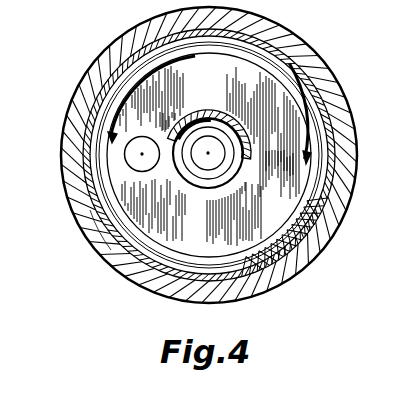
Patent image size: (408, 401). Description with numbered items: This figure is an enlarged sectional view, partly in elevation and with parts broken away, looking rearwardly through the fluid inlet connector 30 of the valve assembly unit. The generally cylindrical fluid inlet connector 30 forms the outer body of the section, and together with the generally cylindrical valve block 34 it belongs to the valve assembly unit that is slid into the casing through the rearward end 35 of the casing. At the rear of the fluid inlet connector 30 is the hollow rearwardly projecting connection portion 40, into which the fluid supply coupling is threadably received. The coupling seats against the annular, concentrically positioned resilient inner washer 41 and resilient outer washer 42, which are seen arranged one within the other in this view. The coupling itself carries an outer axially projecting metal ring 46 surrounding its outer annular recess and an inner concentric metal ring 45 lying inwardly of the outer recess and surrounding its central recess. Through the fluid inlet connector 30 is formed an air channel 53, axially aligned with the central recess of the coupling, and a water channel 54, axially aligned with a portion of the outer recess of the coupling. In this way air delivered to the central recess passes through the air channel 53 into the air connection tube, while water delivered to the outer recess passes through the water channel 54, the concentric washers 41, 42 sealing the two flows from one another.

The fluid inlet connector 30 is at (271, 172).
The valve block 34 is at (402, 95).
The rearward end 35 is at (105, 243).
The connection portion 40 is at (296, 77).
The inner washer 41 is at (198, 186).
The outer washer 42 is at (259, 242).
The inner metal ring 45 is at (217, 118).
The outer metal ring 46 is at (140, 88).
The air channel 53 is at (217, 162).
The water channel 54 is at (137, 162).